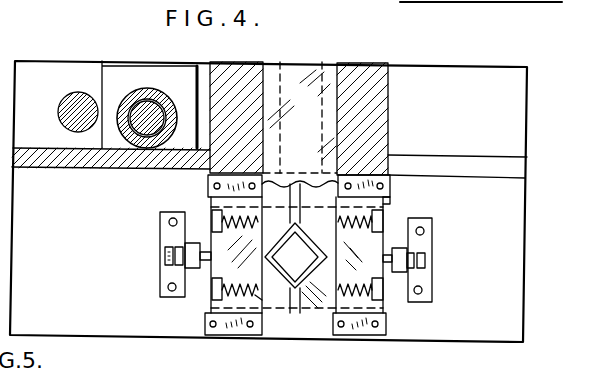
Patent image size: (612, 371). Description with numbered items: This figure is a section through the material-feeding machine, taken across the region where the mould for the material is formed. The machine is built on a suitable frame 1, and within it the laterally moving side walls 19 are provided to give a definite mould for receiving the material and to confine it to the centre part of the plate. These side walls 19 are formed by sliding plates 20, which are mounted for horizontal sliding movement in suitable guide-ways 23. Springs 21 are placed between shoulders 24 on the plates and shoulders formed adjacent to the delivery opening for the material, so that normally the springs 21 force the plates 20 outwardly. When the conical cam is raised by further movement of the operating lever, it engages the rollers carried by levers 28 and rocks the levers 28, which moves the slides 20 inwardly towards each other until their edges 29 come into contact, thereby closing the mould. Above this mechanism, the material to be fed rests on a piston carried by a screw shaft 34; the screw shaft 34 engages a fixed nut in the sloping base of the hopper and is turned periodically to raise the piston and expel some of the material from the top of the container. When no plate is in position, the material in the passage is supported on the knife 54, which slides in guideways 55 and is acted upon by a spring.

The frame 1 is at (508, 258).
The side walls 19 is at (296, 268).
The sliding plates 20 is at (202, 272).
The springs 21 is at (390, 194).
The guide-ways 23 is at (209, 190).
The shoulders 24 is at (211, 226).
The levers 28 is at (185, 265).
The edges 29 is at (300, 183).
The screw shaft 34 is at (143, 100).
The knife 54 is at (297, 80).
The guideways 55 is at (350, 78).